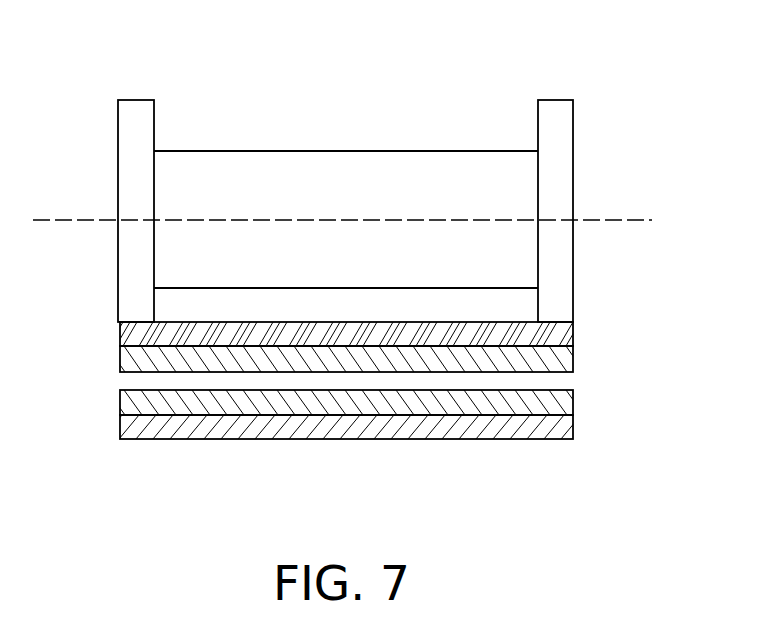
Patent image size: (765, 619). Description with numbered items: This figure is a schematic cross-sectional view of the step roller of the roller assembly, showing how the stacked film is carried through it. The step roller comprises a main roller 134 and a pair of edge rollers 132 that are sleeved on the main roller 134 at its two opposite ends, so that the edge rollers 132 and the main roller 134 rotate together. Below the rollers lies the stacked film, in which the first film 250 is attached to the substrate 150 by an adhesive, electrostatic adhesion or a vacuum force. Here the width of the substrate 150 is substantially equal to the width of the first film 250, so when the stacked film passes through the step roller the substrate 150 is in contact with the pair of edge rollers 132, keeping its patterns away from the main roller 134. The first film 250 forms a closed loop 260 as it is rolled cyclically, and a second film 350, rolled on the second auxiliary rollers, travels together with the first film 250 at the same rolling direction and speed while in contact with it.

The edge rollers 132 is at (134, 108).
The main roller 134 is at (370, 160).
The substrate 150 is at (567, 330).
The first film 250 is at (563, 358).
The closed loop 260 is at (128, 380).
The second film 350 is at (565, 427).